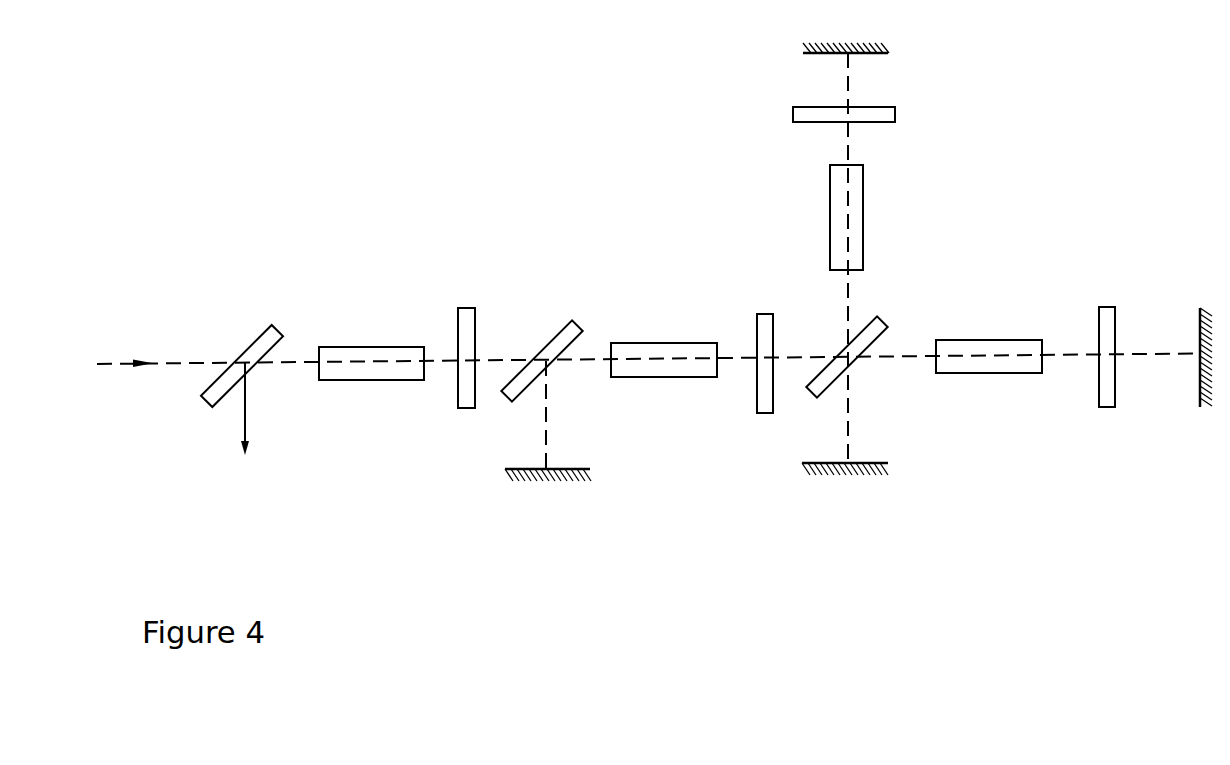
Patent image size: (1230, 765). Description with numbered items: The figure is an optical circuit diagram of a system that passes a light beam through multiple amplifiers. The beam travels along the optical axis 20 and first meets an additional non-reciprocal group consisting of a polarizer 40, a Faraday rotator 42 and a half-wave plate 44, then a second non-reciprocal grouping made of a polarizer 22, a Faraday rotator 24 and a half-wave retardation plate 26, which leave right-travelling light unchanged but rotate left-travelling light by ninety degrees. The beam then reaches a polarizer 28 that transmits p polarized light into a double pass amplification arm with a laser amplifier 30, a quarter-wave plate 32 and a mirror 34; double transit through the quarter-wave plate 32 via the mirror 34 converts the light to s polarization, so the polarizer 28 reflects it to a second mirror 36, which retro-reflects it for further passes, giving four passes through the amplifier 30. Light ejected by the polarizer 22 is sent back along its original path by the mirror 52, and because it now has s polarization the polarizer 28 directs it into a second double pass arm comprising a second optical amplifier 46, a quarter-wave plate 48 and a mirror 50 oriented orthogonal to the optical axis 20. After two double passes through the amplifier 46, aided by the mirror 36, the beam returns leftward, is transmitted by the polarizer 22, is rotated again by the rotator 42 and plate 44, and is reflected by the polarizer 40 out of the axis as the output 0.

The optical axis 20 is at (162, 363).
The polarizer 40 is at (270, 327).
The output 0 is at (246, 430).
The Faraday rotator 42 is at (350, 346).
The half-wave plate 44 is at (470, 308).
The polarizer 22 is at (563, 327).
The mirror 52 is at (590, 472).
The Faraday rotator 24 is at (677, 343).
The half-wave retardation plate 26 is at (763, 314).
The polarizer 28 is at (883, 320).
The second mirror 36 is at (890, 467).
The second optical amplifier 46 is at (863, 200).
The quarter-wave plate 48 is at (895, 112).
The mirror 50 is at (803, 48).
The laser amplifier 30 is at (1002, 340).
The quarter-wave plate 32 is at (1108, 308).
The mirror 34 is at (1198, 398).